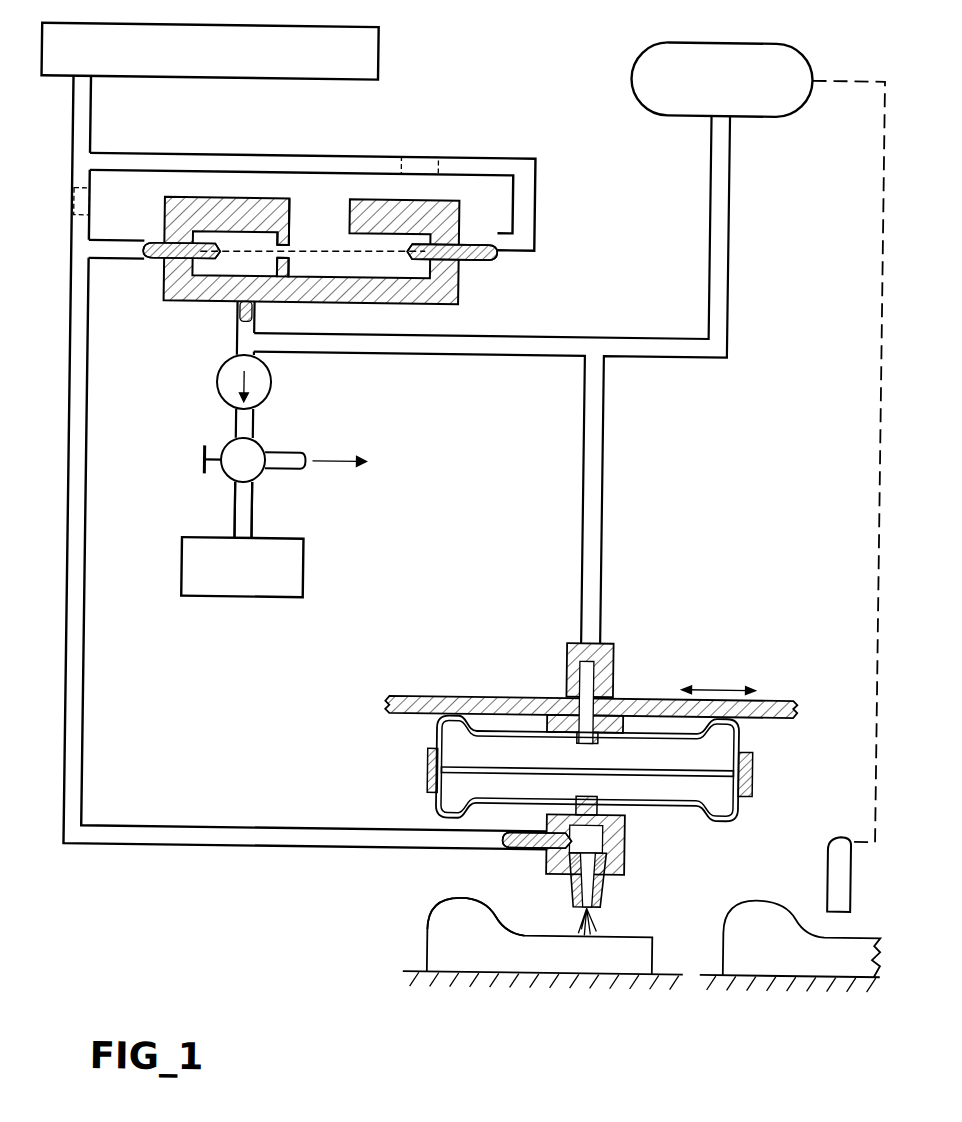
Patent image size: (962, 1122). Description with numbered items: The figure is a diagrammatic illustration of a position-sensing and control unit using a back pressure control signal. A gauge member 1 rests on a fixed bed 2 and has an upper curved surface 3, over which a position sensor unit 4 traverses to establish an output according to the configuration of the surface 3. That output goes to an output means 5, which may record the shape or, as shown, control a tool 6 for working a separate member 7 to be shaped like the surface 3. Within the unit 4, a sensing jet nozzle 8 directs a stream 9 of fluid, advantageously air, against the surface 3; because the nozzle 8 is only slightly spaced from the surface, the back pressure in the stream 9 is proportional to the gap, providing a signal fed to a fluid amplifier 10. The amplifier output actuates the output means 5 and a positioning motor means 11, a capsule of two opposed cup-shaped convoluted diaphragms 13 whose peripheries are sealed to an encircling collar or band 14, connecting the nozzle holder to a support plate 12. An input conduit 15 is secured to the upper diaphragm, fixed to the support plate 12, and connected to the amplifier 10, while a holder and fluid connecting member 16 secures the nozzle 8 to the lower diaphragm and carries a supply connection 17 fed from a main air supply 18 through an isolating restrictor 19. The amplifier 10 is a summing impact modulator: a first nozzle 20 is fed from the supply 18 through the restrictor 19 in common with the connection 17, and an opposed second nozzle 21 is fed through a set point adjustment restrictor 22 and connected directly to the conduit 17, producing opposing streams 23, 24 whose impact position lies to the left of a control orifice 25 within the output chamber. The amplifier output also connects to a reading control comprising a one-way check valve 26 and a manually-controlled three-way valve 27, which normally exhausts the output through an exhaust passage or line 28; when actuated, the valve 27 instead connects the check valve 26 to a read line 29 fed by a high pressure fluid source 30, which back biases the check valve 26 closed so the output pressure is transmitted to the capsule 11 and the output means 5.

The gauge member 1 is at (490, 950).
The fixed bed 2 is at (408, 973).
The curved surface 3 is at (447, 904).
The position sensor unit 4 is at (639, 645).
The output means 5 is at (630, 60).
The tool 6 is at (832, 858).
The separate member 7 is at (790, 965).
The sensing jet nozzle 8 is at (578, 884).
The stream 9 is at (602, 925).
The fluid amplifier 10 is at (458, 207).
The positioning motor means 11 is at (440, 800).
The support plate 12 is at (786, 680).
The cup-shaped convoluted diaphragms 13 is at (756, 792).
The encircling collar or band 14 is at (430, 770).
The input conduit 15 is at (567, 686).
The holder and fluid connecting member 16 is at (631, 838).
The supply connection 17 is at (540, 848).
The main air supply 18 is at (366, 53).
The isolating restrictor 19 is at (69, 210).
The first nozzle 20 is at (162, 266).
The second nozzle 21 is at (468, 262).
The set point adjustment restrictor 22 is at (412, 158).
The opposing stream 23 is at (354, 260).
The opposing stream 24 is at (231, 250).
The control orifice 25 is at (286, 255).
The one-way check valve 26 is at (215, 385).
The manually-controlled three-way valve 27 is at (226, 448).
The exhaust passage or line 28 is at (284, 457).
The read line 29 is at (239, 509).
The high pressure fluid source 30 is at (296, 582).